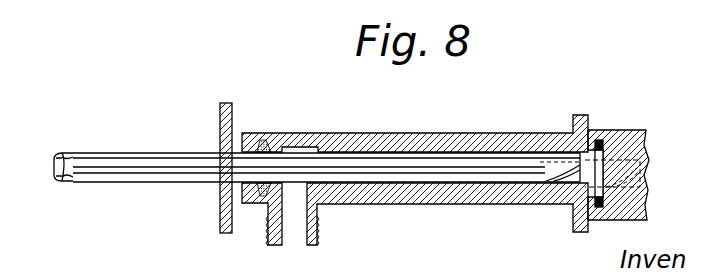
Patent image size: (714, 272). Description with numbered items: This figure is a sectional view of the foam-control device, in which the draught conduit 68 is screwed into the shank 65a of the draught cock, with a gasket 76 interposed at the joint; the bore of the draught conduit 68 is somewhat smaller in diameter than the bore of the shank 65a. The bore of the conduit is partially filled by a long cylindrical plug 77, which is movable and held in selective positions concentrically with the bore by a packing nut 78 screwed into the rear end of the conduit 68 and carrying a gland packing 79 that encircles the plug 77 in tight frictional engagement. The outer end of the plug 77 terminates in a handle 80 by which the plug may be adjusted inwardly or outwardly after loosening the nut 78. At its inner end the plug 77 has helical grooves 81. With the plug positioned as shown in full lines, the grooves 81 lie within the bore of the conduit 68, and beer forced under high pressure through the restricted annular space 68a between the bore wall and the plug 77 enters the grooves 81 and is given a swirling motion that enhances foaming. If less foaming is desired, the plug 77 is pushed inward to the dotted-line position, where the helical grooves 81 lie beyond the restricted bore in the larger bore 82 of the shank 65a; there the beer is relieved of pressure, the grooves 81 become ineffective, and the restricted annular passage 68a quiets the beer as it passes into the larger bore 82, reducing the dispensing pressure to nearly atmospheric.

The shank 65a is at (630, 136).
The draught conduit 68 is at (415, 180).
The restricted annular space 68a is at (448, 192).
The gasket 76 is at (599, 140).
The plug 77 is at (418, 170).
The packing nut 78 is at (232, 113).
The gland packing 79 is at (263, 143).
The handle 80 is at (58, 152).
The helical grooves 81 is at (566, 178).
The larger bore 82 is at (626, 197).